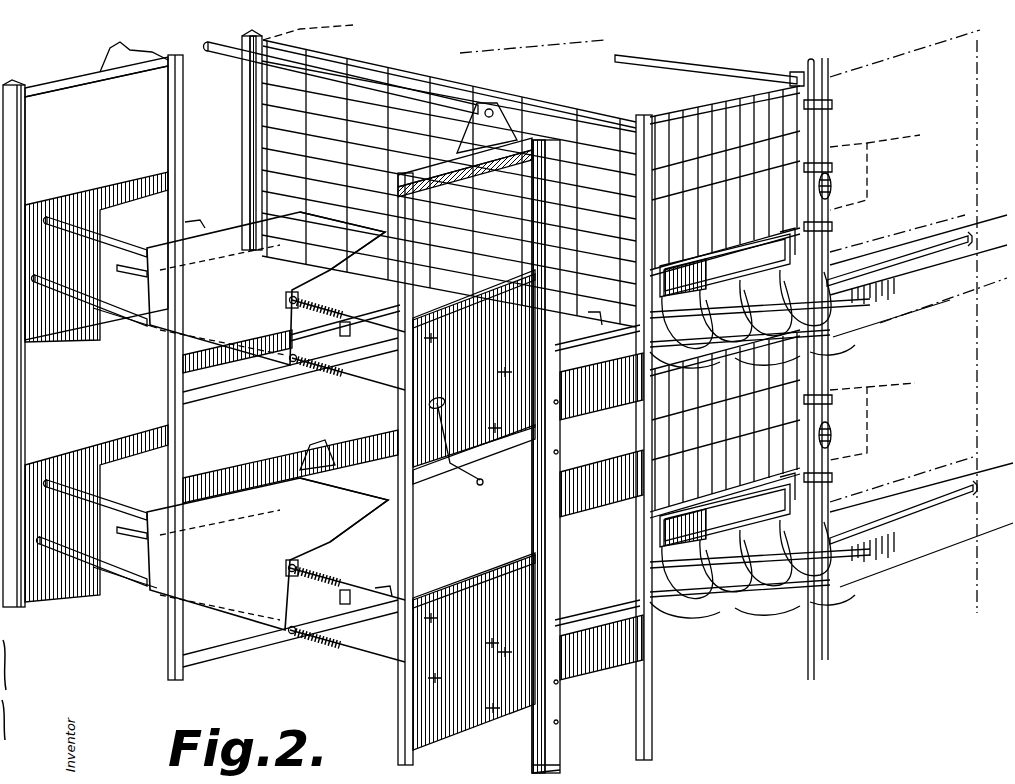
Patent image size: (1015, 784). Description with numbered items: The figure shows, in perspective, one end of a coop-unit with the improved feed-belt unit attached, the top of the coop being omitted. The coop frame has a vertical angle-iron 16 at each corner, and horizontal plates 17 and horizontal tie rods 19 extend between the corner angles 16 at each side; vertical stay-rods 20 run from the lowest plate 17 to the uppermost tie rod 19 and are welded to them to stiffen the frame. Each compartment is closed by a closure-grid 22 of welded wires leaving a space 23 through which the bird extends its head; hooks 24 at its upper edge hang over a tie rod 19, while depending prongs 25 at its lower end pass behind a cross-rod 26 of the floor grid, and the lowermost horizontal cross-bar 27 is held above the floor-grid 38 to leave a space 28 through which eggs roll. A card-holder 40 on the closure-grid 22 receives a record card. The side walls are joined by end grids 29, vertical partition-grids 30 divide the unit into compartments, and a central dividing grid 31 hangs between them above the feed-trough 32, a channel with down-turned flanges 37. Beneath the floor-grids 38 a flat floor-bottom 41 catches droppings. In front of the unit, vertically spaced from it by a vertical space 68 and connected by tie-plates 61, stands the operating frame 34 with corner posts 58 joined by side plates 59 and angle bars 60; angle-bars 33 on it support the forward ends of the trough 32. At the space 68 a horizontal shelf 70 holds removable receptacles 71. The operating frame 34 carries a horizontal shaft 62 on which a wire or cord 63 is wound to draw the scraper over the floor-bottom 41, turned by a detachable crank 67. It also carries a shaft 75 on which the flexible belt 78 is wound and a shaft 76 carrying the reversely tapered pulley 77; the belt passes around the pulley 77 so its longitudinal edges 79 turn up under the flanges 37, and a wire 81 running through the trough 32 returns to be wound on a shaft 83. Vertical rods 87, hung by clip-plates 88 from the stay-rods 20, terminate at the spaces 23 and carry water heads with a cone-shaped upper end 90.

The vertical angle-iron 16 is at (642, 115).
The horizontal plate 17 is at (235, 482).
The horizontal tie rod 19 is at (340, 52).
The stay-rod 20 is at (810, 62).
The closure-grid 22 is at (795, 225).
The space 23 is at (852, 392).
The hook 24 is at (790, 78).
The depending prong 25 is at (921, 376).
The cross-rod 26 is at (832, 262).
The lowermost horizontal cross-bar 27 is at (778, 276).
The space 28 is at (901, 357).
The end grid 29 is at (545, 108).
The partition-grid 30 is at (698, 66).
The central dividing grid 31 is at (472, 58).
The feed-trough 32 is at (350, 165).
The angle-bar 33 is at (190, 222).
The operating frame 34 is at (160, 128).
The down-turned flange 37 is at (385, 185).
The floor-grid 38 is at (760, 435).
The card-holder 40 is at (774, 342).
The floor-bottom 41 is at (372, 350).
The corner post 58 is at (168, 97).
The side plate 59 is at (98, 200).
The angle bar 60 is at (100, 72).
The tie-plate 61 is at (617, 690).
The horizontal shaft 62 is at (125, 320).
The wire or cord 63 is at (296, 375).
The detachable crank 67 is at (455, 468).
The vertical space 68 is at (560, 745).
The horizontal shelf 70 is at (190, 408).
The removable receptacle 71 is at (413, 502).
The horizontal shaft 75 is at (95, 318).
The shaft 76 is at (112, 242).
The reversely tapered pulley 77 is at (110, 300).
The flexible belt 78 is at (175, 335).
The longitudinal edge 79 is at (240, 230).
The wire or cord 81 is at (336, 335).
The horizontal shaft 83 is at (352, 338).
The vertical rod 87 is at (830, 86).
The clip-plate 88 is at (832, 105).
The cone-shaped upper end 90 is at (831, 185).